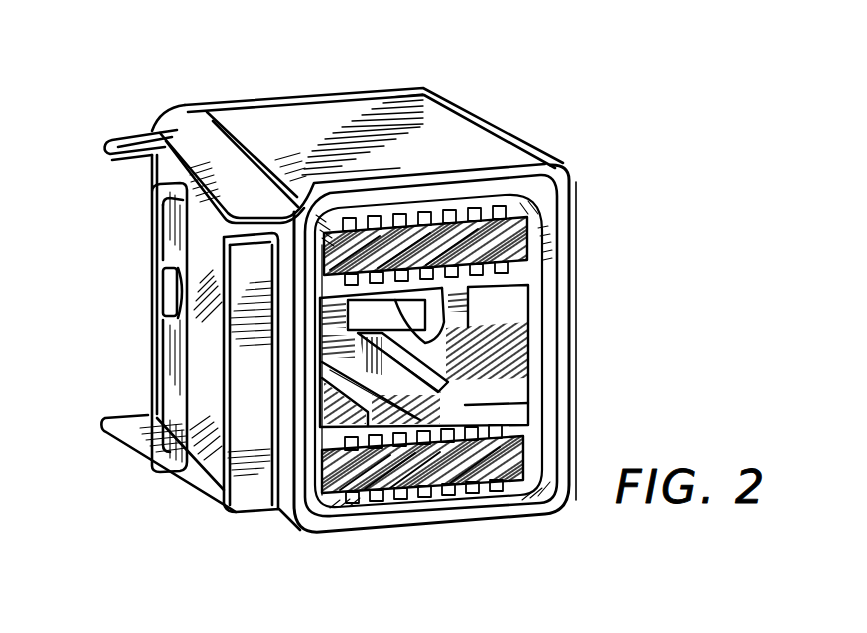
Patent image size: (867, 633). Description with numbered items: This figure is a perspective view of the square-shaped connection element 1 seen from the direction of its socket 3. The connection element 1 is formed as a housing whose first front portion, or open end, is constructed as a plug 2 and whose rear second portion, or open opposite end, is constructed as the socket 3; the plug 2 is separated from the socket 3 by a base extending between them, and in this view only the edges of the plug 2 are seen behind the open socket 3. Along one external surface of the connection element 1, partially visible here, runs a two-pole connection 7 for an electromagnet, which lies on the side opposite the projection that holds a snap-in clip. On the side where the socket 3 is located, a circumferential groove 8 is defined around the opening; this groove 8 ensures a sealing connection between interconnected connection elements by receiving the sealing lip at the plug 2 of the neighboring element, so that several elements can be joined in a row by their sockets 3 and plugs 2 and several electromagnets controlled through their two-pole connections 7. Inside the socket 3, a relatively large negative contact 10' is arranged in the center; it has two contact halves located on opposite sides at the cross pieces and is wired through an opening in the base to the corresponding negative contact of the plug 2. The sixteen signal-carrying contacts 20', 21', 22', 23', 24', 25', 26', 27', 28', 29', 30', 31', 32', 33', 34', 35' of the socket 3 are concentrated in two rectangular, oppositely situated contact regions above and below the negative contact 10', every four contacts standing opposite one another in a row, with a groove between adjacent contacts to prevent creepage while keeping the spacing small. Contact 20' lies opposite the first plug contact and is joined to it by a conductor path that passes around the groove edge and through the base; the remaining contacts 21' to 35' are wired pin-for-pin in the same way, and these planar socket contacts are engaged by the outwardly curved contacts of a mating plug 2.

The connection element 1 is at (327, 112).
The plug 2 is at (232, 93).
The socket 3 is at (378, 546).
The two-pole connection 7 is at (152, 232).
The circumferential groove 8 is at (568, 265).
The negative contact 10' is at (476, 356).
The signal-carrying contact 20' is at (502, 534).
The signal-carrying contact 21' is at (365, 527).
The signal-carrying contact 22' is at (261, 545).
The signal-carrying contact 23' is at (321, 533).
The signal-carrying contact 24' is at (441, 516).
The signal-carrying contact 25' is at (483, 529).
The signal-carrying contact 26' is at (484, 444).
The signal-carrying contact 27' is at (496, 400).
The signal-carrying contact 28' is at (509, 334).
The signal-carrying contact 29' is at (497, 314).
The signal-carrying contact 30' is at (450, 151).
The signal-carrying contact 31' is at (410, 146).
The signal-carrying contact 32' is at (380, 154).
The signal-carrying contact 33' is at (314, 185).
The signal-carrying contact 34' is at (461, 153).
The signal-carrying contact 35' is at (469, 186).